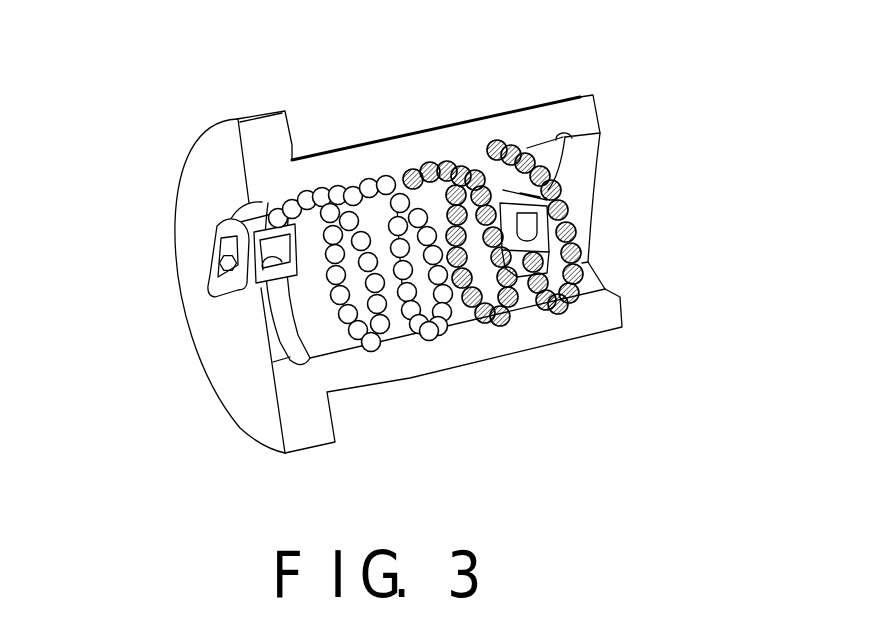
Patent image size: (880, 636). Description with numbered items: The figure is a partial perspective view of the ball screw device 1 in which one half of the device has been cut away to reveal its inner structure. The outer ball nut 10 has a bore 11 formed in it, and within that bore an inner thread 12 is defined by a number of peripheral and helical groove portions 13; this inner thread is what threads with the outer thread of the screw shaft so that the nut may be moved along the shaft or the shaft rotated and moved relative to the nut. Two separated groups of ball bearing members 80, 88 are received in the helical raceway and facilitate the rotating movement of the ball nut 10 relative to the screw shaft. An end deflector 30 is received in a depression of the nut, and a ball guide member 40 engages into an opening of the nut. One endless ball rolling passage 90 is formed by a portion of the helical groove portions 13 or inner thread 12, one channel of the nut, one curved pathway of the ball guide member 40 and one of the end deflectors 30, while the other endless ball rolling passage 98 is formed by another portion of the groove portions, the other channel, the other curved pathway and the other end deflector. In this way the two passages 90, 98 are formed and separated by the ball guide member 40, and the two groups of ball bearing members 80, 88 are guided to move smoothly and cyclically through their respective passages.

The ball screw device 1 is at (194, 103).
The outer ball nut 10 is at (595, 325).
The bore 11 is at (250, 333).
The inner thread 12 is at (572, 130).
The peripheral and helical groove portions 13 is at (280, 348).
The end deflector 30 is at (210, 284).
The ball guide member 40 is at (398, 236).
The ball bearing members 80 is at (496, 140).
The ball bearing members 88 is at (328, 190).
The endless ball rolling passage 90 is at (530, 279).
The endless ball rolling passage 98 is at (398, 342).